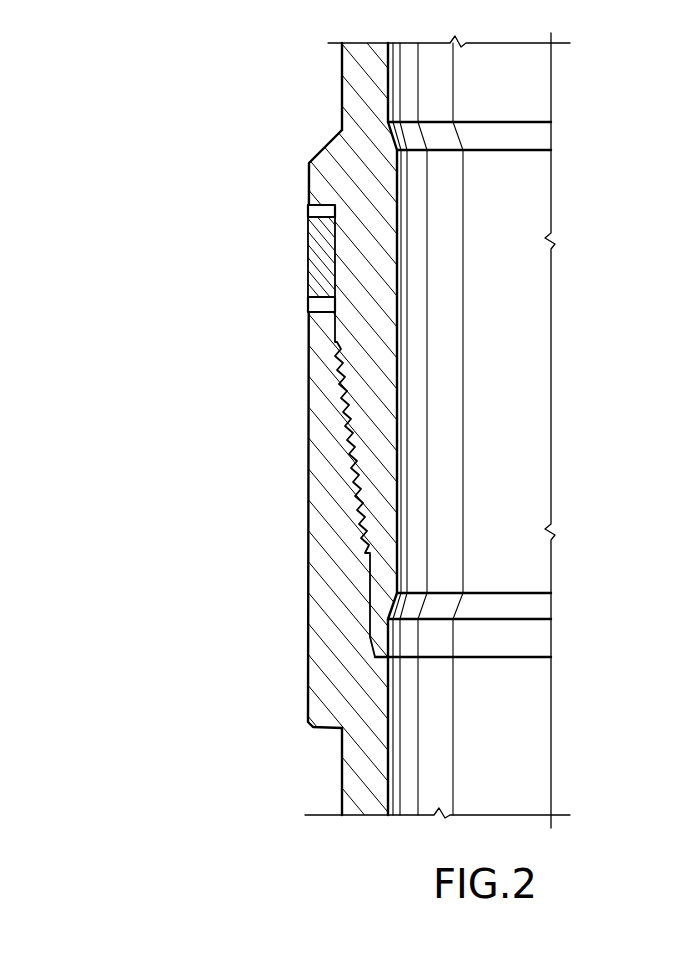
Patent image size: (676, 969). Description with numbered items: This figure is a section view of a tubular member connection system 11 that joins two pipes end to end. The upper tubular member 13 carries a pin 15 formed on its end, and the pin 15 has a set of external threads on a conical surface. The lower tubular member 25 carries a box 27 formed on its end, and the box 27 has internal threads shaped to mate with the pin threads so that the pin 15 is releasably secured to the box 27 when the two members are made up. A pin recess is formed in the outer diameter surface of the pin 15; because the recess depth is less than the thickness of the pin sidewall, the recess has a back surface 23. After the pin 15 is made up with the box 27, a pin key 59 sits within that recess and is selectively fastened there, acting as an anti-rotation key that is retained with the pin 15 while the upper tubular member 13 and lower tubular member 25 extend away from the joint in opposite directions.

The tubular member connection system 11 is at (201, 318).
The upper tubular member 13 is at (356, 78).
The pin 15 is at (570, 346).
The back surface 23 is at (328, 268).
The lower tubular member 25 is at (343, 777).
The box 27 is at (296, 480).
The pin key 59 is at (311, 241).